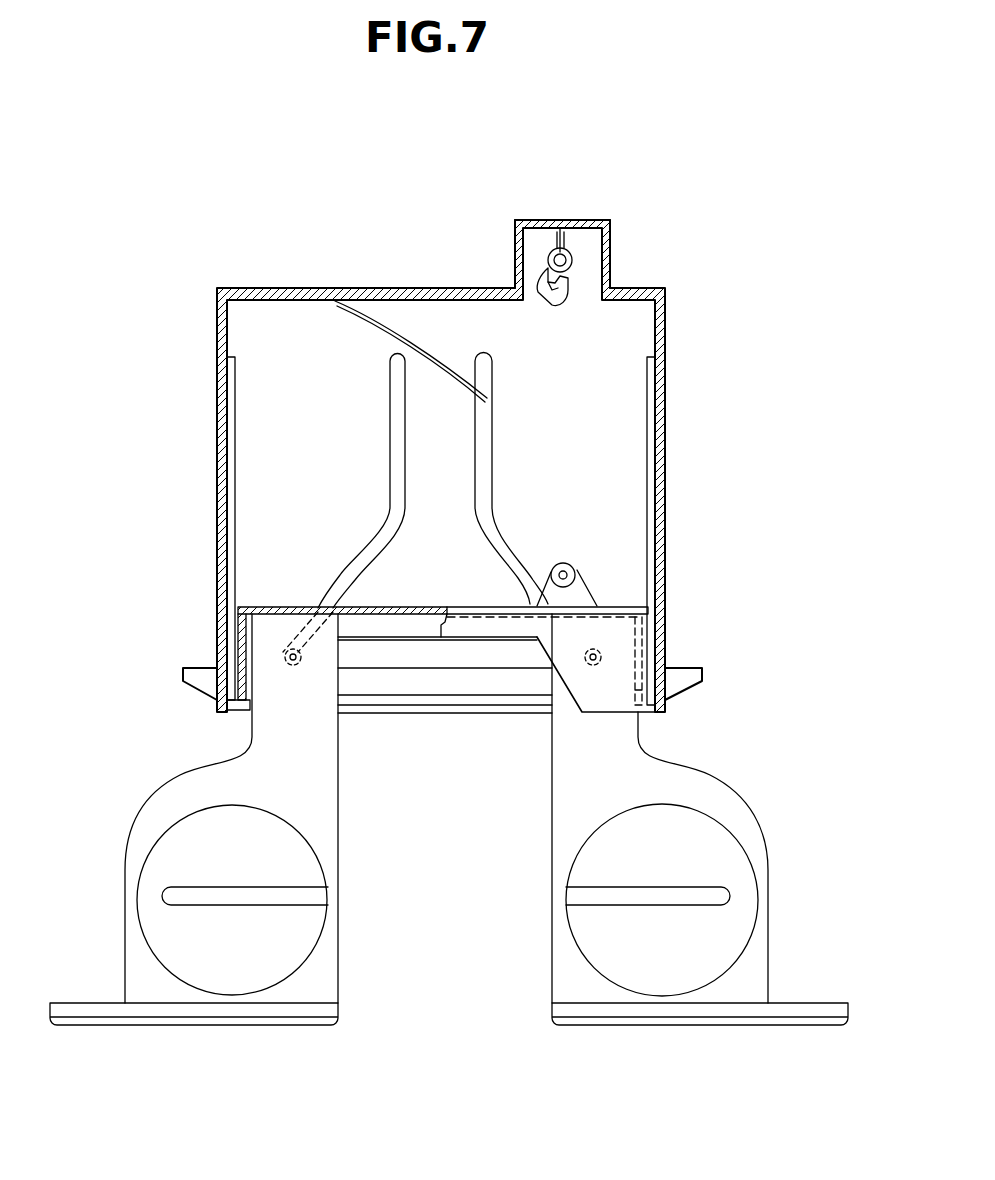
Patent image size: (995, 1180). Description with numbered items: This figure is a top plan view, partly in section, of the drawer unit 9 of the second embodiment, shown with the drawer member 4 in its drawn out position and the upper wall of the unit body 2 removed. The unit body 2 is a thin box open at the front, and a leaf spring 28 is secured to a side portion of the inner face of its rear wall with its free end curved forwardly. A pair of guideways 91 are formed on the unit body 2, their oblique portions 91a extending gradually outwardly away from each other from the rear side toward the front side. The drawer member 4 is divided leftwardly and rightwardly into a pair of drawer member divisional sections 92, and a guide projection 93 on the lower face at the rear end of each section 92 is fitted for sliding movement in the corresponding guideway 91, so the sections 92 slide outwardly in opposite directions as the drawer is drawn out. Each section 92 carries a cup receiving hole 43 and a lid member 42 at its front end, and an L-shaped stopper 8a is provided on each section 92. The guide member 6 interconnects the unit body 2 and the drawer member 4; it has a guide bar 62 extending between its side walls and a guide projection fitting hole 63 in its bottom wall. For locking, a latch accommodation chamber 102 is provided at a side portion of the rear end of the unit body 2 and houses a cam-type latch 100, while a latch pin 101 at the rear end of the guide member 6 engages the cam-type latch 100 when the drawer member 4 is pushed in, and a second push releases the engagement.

The unit body 2 is at (213, 354).
The drawer member 4 is at (449, 859).
The guide member 6 is at (625, 598).
The L-shaped stopper 8a is at (185, 887).
The drawer unit 9 is at (598, 206).
The leaf spring 28 is at (400, 318).
The lid member 42 is at (203, 1020).
The cup receiving hole 43 is at (153, 902).
The guide bar 62 is at (447, 700).
The guide projection fitting hole 63 is at (515, 660).
The guideway 91 is at (398, 385).
The oblique portion 91a is at (367, 575).
The drawer member divisional section 92 is at (306, 990).
The guide projection 93 is at (285, 657).
The cam-type latch 100 is at (572, 283).
The latch pin 101 is at (576, 572).
The latch accommodation chamber 102 is at (535, 238).